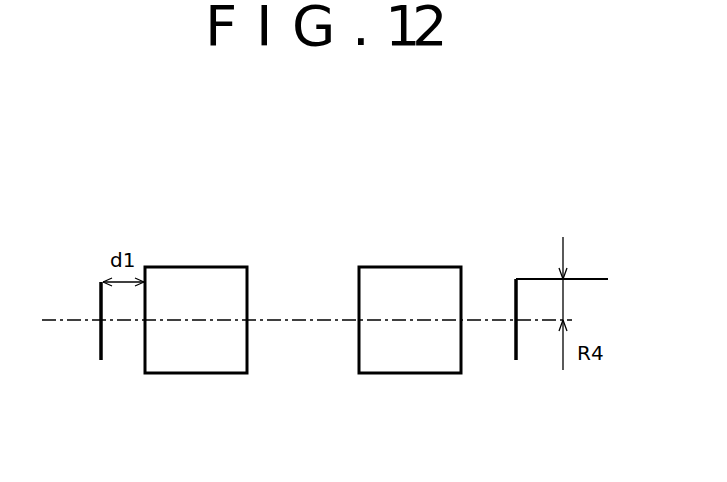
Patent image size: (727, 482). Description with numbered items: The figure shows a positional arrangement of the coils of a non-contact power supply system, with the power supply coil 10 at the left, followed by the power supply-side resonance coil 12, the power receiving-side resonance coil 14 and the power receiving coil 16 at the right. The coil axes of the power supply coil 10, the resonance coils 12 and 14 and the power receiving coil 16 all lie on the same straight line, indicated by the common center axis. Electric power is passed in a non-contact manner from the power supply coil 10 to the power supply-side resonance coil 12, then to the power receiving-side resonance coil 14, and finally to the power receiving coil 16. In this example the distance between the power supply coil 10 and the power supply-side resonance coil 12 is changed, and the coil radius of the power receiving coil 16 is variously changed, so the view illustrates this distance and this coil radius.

The power supply coil 10 is at (100, 284).
The power supply-side resonance coil 12 is at (175, 267).
The power receiving-side resonance coil 14 is at (388, 267).
The power receiving coil 16 is at (535, 279).